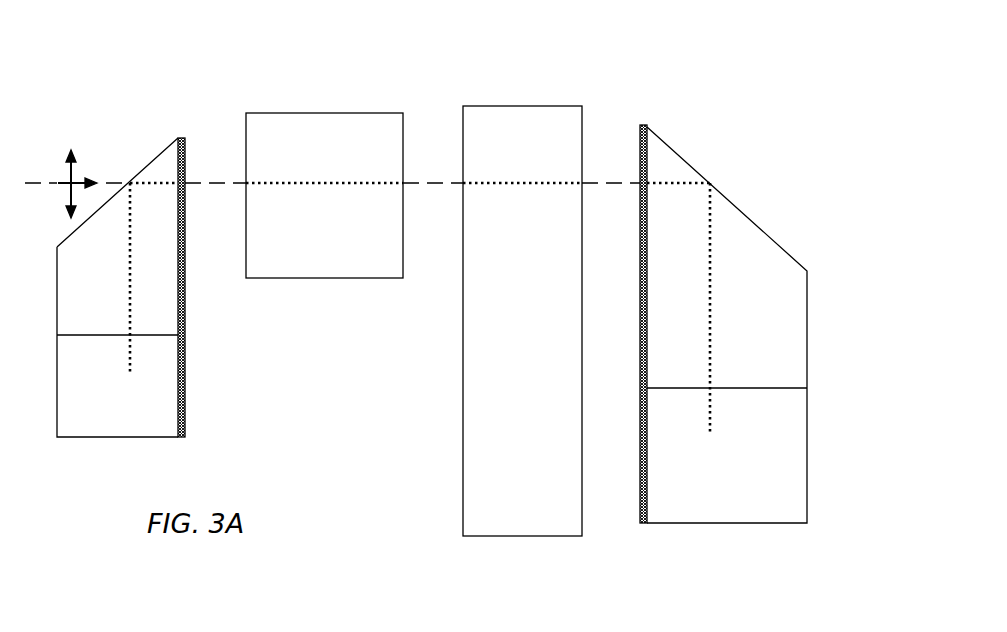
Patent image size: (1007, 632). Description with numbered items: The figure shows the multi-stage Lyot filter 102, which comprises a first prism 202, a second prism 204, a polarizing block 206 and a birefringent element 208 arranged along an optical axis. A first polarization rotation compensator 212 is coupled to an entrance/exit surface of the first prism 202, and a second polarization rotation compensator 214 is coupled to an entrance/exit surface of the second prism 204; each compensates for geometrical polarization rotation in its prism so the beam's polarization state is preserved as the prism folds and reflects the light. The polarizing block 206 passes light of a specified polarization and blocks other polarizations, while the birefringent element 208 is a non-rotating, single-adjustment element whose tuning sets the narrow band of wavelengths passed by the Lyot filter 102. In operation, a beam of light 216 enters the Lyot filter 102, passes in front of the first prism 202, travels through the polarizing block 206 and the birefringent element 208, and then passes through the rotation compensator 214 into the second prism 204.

The Lyot filter 102 is at (757, 82).
The first prism 202 is at (135, 437).
The second prism 204 is at (700, 523).
The polarizing block 206 is at (320, 278).
The birefringent element 208 is at (463, 466).
The first polarization rotation compensator 212 is at (180, 138).
The second polarization rotation compensator 214 is at (644, 125).
The beam of light 216 is at (40, 185).